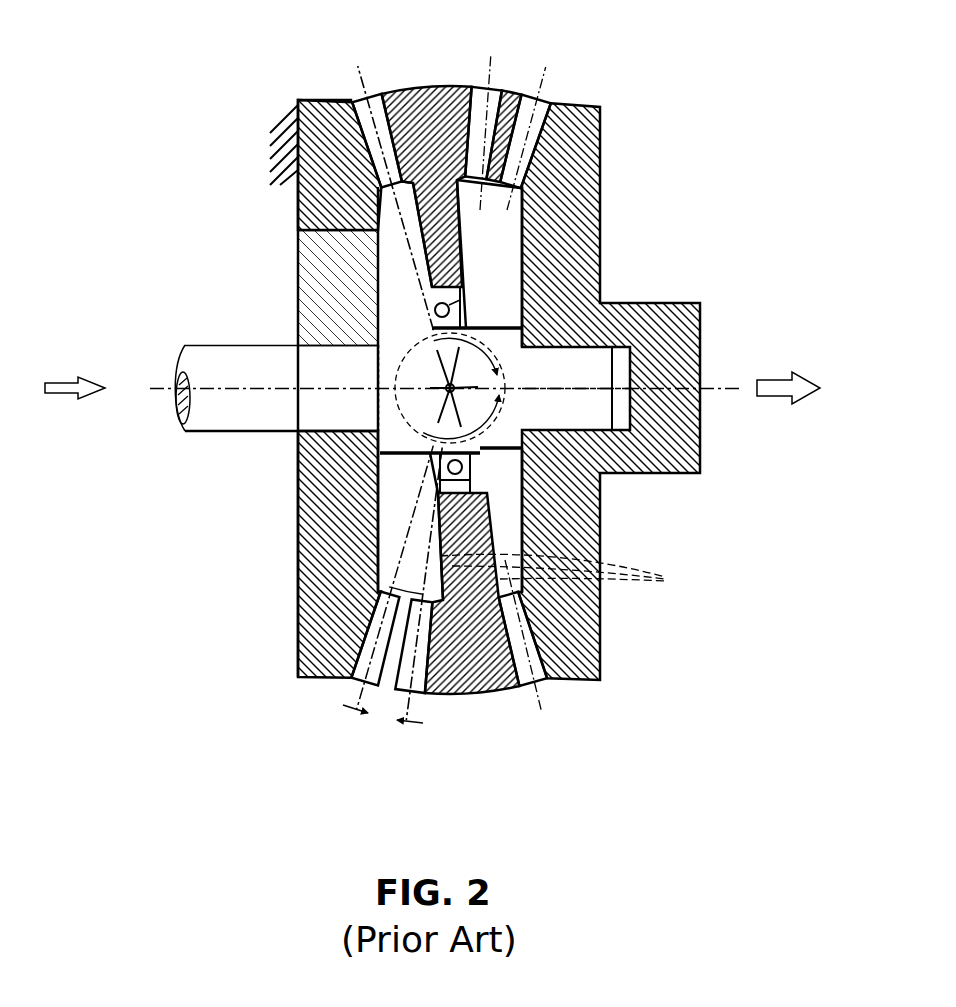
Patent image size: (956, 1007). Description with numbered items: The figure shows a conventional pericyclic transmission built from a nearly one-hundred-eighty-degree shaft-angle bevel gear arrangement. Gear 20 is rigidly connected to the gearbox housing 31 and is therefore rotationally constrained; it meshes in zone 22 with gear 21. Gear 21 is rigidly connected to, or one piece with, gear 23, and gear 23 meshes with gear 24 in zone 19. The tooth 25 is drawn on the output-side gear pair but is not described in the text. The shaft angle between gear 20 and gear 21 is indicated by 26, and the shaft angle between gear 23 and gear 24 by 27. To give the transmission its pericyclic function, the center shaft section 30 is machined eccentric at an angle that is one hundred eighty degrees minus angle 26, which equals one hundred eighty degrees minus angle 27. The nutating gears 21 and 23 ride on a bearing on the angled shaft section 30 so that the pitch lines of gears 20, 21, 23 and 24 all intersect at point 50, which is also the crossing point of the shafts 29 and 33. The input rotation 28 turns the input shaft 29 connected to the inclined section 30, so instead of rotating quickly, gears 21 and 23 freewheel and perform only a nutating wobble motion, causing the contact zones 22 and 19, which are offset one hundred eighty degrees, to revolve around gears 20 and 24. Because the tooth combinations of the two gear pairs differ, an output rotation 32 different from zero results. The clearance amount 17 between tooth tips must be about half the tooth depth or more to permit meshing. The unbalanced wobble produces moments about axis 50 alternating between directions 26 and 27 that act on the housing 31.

The clearance amount 17 is at (385, 722).
The meshing zone 19 is at (538, 685).
The gear 20 is at (298, 228).
The gear 21 is at (401, 92).
The meshing zone 22 is at (352, 98).
The gear 23 is at (457, 88).
The gear 24 is at (563, 140).
The output gear tooth 25 is at (543, 102).
The shaft angle 26 is at (477, 263).
The shaft angle 27 is at (451, 571).
The input rotation 28 is at (74, 389).
The input shaft 29 is at (261, 433).
The center shaft section 30 is at (411, 391).
The gearbox housing 31 is at (270, 140).
The output rotation 32 is at (786, 389).
The shaft 33 is at (567, 420).
The point 50 is at (465, 345).